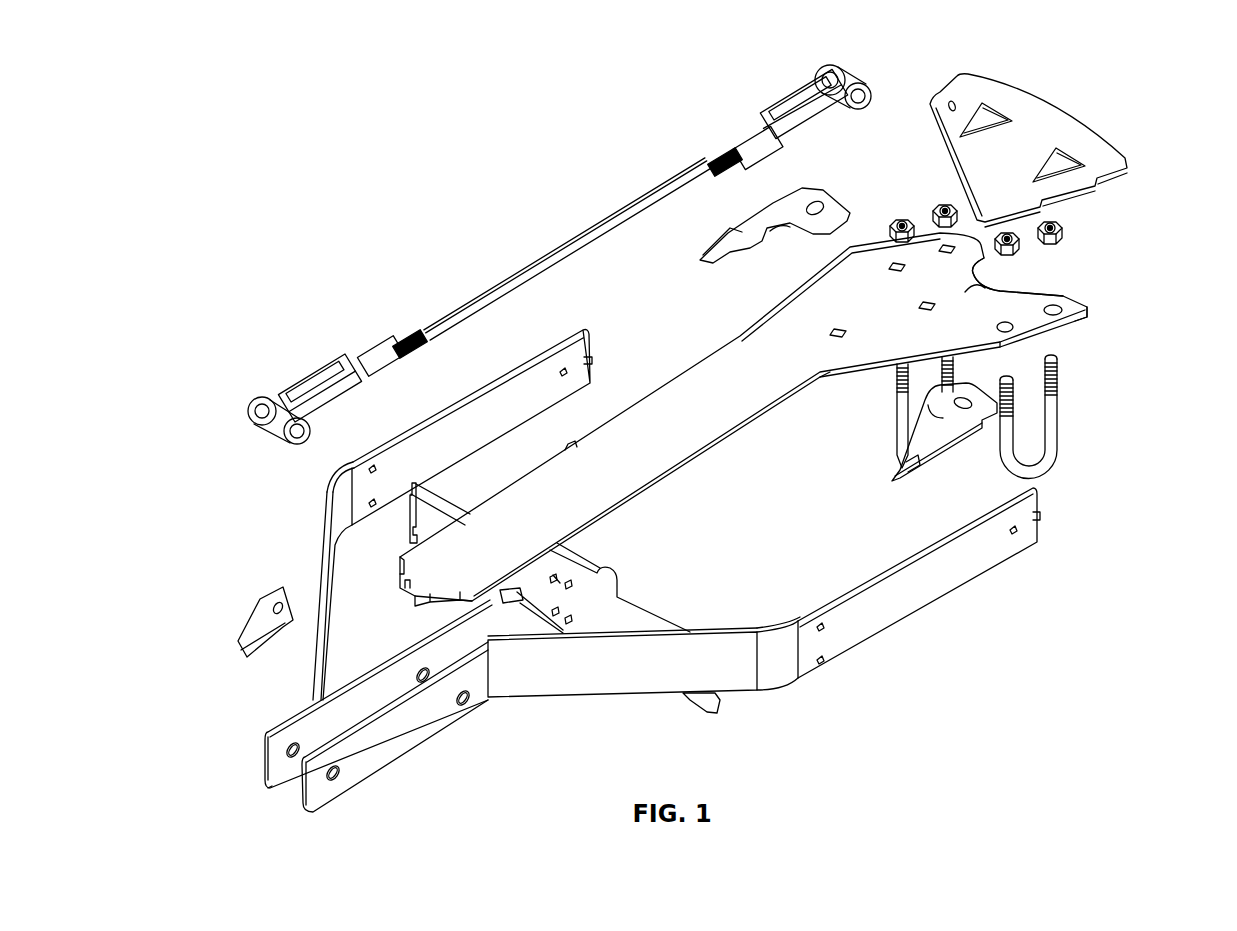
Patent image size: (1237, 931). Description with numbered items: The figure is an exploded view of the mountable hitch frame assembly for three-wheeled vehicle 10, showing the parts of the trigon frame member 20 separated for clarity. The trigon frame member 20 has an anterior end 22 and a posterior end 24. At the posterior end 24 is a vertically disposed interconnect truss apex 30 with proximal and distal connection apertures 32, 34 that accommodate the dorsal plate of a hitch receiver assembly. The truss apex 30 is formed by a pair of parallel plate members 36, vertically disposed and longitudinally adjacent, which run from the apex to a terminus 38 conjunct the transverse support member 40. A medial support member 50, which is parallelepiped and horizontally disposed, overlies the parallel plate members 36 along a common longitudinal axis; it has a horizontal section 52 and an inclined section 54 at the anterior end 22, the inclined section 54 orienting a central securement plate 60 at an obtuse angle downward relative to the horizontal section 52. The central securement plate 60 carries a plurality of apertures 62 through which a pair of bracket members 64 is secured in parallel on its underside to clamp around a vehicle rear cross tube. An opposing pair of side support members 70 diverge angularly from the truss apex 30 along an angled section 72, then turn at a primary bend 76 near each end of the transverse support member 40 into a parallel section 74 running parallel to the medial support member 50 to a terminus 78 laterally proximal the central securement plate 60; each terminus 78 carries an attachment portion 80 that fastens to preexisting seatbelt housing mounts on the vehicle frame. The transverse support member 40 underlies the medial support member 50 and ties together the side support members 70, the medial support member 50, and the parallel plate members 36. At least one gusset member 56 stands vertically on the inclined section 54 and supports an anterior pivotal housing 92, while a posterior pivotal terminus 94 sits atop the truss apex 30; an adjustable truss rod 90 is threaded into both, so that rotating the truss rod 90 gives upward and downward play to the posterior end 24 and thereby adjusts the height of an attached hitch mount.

The mountable hitch frame assembly for three-wheeled vehicle 10 is at (1153, 119).
The trigon frame member 20 is at (1040, 624).
The anterior end 22 is at (1046, 281).
The posterior end 24 is at (264, 795).
The interconnect truss apex 30 is at (362, 710).
The proximal connection aperture 32 is at (425, 677).
The distal connection aperture 34 is at (296, 752).
The parallel plate members 36 is at (352, 712).
The terminus 38 is at (566, 632).
The transverse support member 40 is at (588, 601).
The medial support member 50 is at (642, 403).
The horizontal section 52 is at (694, 462).
The inclined section 54 is at (937, 343).
The gusset member 56 is at (1055, 104).
The central securement plate 60 is at (972, 288).
The apertures 62 is at (1053, 310).
The bracket members 64 is at (897, 412).
The side support members 70 is at (668, 531).
The angled section 72 is at (317, 574).
The parallel section 74 is at (463, 451).
The primary bend 76 is at (332, 484).
The terminus 78 is at (596, 368).
The attachment portion 80 is at (730, 255).
The adjustable truss rod 90 is at (580, 232).
The anterior pivotal housing 92 is at (790, 83).
The posterior pivotal terminus 94 is at (372, 343).